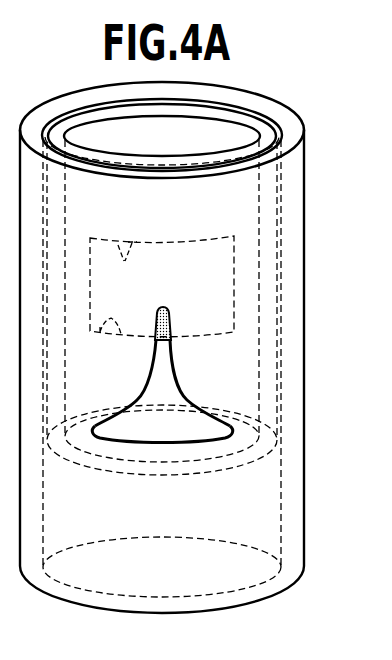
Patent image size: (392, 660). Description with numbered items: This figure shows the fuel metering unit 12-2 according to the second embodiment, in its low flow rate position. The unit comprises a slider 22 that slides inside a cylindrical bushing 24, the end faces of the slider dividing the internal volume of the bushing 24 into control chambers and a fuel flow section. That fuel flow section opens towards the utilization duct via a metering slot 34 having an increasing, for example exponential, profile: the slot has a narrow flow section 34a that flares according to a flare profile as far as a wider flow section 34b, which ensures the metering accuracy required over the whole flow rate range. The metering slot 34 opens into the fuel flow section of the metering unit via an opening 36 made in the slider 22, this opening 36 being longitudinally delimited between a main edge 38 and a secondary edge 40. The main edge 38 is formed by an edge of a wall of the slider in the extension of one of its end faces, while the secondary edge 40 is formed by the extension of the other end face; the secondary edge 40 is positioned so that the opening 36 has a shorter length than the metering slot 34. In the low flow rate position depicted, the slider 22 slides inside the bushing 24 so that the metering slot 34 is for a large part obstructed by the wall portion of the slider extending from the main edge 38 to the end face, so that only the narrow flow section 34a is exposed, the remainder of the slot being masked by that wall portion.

The fuel metering unit 12-2 is at (310, 254).
The slider 22 is at (197, 107).
The bushing 24 is at (268, 108).
The metering slot 34 is at (178, 397).
The narrow flow section 34a is at (172, 308).
The wider flow section 34b is at (117, 408).
The opening 36 is at (234, 284).
The main edge 38 is at (120, 336).
The secondary edge 40 is at (117, 247).